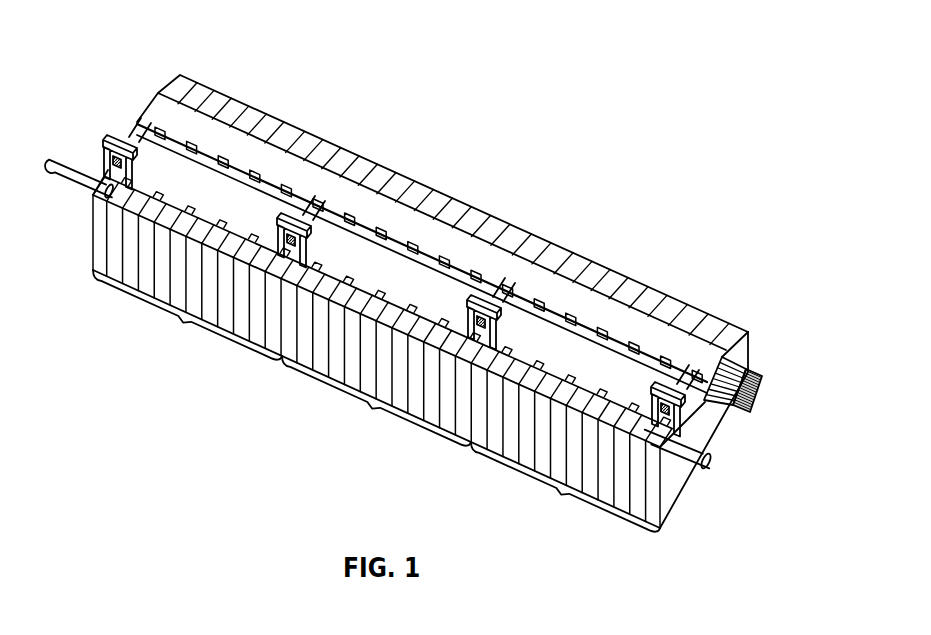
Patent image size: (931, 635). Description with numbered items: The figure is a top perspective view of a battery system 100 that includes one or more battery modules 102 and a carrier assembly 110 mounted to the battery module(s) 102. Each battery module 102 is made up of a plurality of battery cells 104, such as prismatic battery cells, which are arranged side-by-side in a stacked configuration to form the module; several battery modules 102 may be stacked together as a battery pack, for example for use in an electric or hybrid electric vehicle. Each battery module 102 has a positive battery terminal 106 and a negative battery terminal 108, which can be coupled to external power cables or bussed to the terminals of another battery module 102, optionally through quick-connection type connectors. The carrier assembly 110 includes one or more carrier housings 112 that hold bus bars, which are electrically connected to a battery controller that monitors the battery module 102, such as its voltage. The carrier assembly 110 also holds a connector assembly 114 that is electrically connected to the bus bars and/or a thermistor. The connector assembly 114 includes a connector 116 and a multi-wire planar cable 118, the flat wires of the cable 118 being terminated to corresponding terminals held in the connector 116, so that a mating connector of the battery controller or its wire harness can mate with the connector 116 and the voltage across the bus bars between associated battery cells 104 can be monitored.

The battery system 100 is at (515, 172).
The battery module 102 is at (183, 325).
The battery cell 104 is at (725, 323).
The positive battery terminal 106 is at (707, 451).
The negative battery terminal 108 is at (108, 144).
The carrier assembly 110 is at (258, 155).
The carrier housing 112 is at (703, 357).
The connector assembly 114 is at (770, 375).
The connector 116 is at (760, 384).
The multi-wire planar cable 118 is at (709, 395).